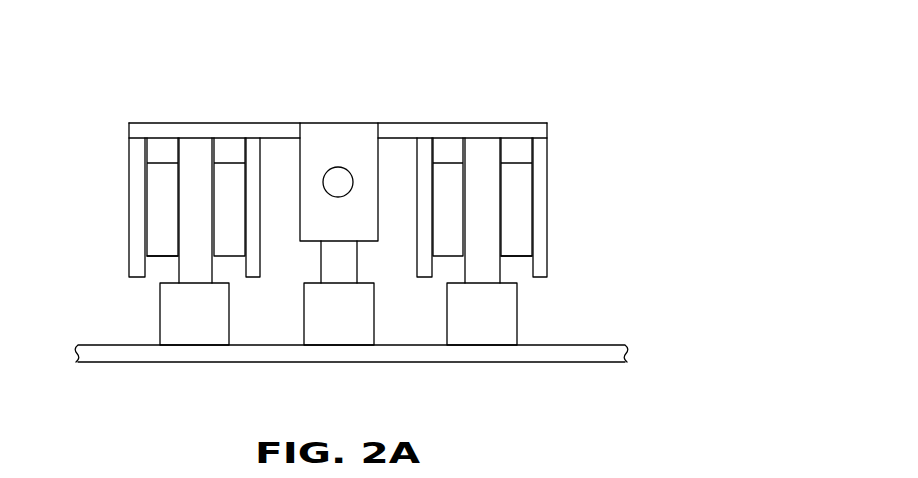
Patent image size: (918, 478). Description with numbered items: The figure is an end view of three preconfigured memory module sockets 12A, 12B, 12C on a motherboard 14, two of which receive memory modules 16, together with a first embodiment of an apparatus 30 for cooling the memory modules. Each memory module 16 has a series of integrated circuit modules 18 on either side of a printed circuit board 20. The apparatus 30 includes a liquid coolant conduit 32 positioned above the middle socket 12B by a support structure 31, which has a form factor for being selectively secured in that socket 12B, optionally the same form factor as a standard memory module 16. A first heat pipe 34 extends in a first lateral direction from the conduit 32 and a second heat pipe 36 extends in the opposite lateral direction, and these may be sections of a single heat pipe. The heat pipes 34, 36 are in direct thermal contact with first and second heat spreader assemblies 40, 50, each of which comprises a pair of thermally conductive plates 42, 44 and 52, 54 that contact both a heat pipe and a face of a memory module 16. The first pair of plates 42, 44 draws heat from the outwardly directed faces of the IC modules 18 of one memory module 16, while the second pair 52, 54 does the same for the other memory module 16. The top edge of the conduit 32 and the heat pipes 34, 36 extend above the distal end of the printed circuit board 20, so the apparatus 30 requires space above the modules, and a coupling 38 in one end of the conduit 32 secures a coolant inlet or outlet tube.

The memory module socket 12A is at (160, 301).
The middle memory module socket 12B is at (303, 332).
The memory module socket 12C is at (517, 309).
The motherboard 14 is at (613, 345).
The memory module 16 is at (155, 278).
The integrated circuit module 18 is at (157, 163).
The printed circuit board 20 is at (190, 153).
The cooling apparatus 30 is at (538, 103).
The support structure 31 is at (357, 260).
The liquid coolant conduit 32 is at (346, 130).
The first heat pipe 34 is at (250, 132).
The second heat pipe 36 is at (502, 130).
The coupling 38 is at (350, 197).
The first heat spreader assembly 40 is at (112, 135).
The thermally conductive plate 42 is at (130, 203).
The thermally conductive plate 44 is at (263, 216).
The second heat spreader assembly 50 is at (565, 177).
The thermally conductive plate 52 is at (548, 199).
The thermally conductive plate 54 is at (417, 216).